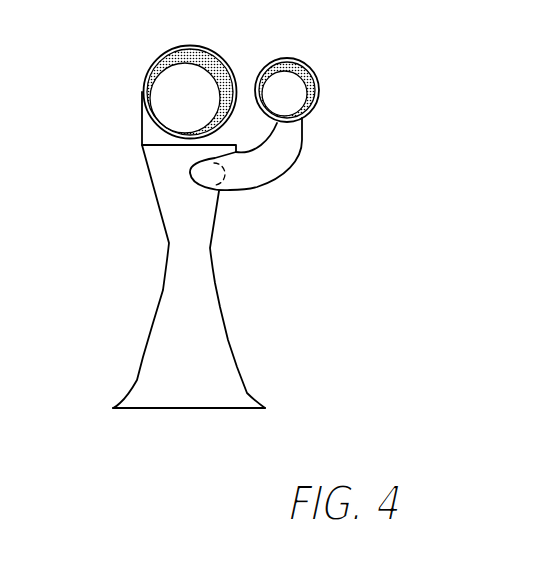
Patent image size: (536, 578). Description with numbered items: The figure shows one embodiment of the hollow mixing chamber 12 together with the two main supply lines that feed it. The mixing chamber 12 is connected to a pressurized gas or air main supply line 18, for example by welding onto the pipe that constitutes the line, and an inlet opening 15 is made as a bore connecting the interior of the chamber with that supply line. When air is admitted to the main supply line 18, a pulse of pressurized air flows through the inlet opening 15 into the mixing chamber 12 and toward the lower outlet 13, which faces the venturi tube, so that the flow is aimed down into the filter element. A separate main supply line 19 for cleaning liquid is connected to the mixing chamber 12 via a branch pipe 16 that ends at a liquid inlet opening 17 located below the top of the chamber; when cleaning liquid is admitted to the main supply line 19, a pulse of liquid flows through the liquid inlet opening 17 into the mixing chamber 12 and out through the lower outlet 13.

The mixing chamber 12 is at (198, 338).
The lower outlet 13 is at (188, 408).
The inlet opening 15 is at (152, 107).
The branch pipe 16 is at (283, 143).
The liquid inlet opening 17 is at (215, 177).
The main supply line 18 is at (164, 85).
The main supply line 19 is at (289, 90).